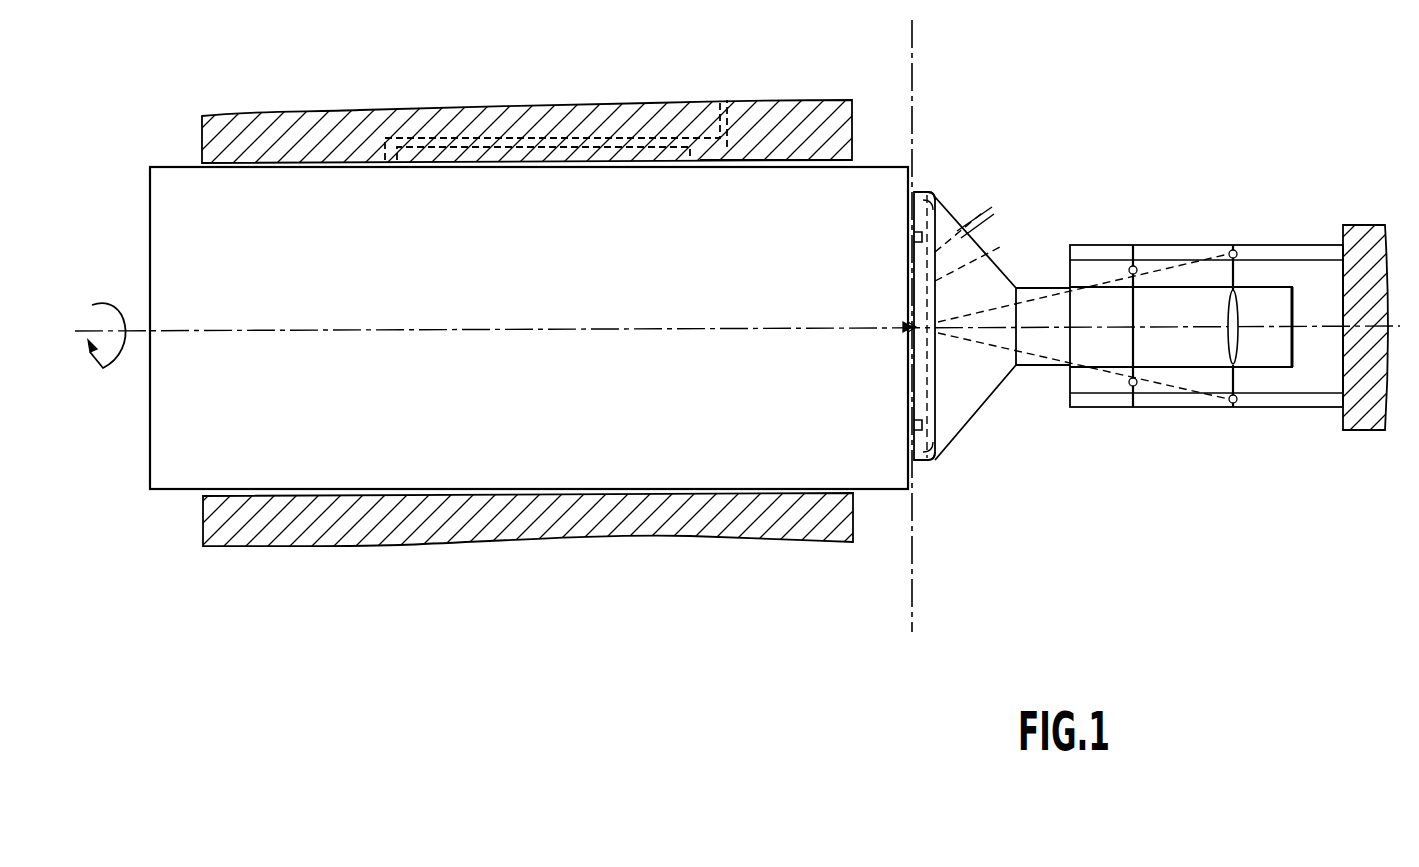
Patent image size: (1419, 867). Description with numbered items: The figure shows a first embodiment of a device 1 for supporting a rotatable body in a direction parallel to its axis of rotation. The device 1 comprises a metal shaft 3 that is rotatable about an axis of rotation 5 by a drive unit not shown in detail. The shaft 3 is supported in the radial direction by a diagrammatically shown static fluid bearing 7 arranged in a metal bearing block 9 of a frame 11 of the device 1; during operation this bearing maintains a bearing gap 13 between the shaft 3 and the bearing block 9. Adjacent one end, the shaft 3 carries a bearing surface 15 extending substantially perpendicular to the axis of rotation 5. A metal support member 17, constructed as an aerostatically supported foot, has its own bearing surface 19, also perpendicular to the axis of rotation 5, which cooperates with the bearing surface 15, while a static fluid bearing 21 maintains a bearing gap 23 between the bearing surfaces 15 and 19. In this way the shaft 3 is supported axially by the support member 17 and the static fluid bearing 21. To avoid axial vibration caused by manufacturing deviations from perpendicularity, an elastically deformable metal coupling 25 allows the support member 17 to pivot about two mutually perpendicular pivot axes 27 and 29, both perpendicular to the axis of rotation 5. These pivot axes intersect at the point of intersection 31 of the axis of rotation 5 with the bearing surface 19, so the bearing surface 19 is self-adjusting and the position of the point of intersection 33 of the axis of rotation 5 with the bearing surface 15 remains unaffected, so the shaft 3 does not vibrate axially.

The device 1 is at (222, 562).
The metal shaft 3 is at (167, 465).
The axis of rotation 5 is at (213, 329).
The static fluid bearing 7 is at (460, 140).
The metal bearing block 9 is at (773, 117).
The frame 11 is at (1369, 241).
The bearing gap 13 is at (833, 158).
The bearing surface 15 is at (914, 175).
The metal support member 17 is at (978, 397).
The bearing surface 19 is at (937, 200).
The static fluid bearing 21 is at (989, 251).
The bearing gap 23 is at (932, 463).
The elastically deformable metal coupling 25 is at (1272, 383).
The pivot axis 27 is at (914, 78).
The pivot axis 29 is at (908, 327).
The point of intersection 31 is at (870, 312).
The point of intersection 33 is at (906, 330).